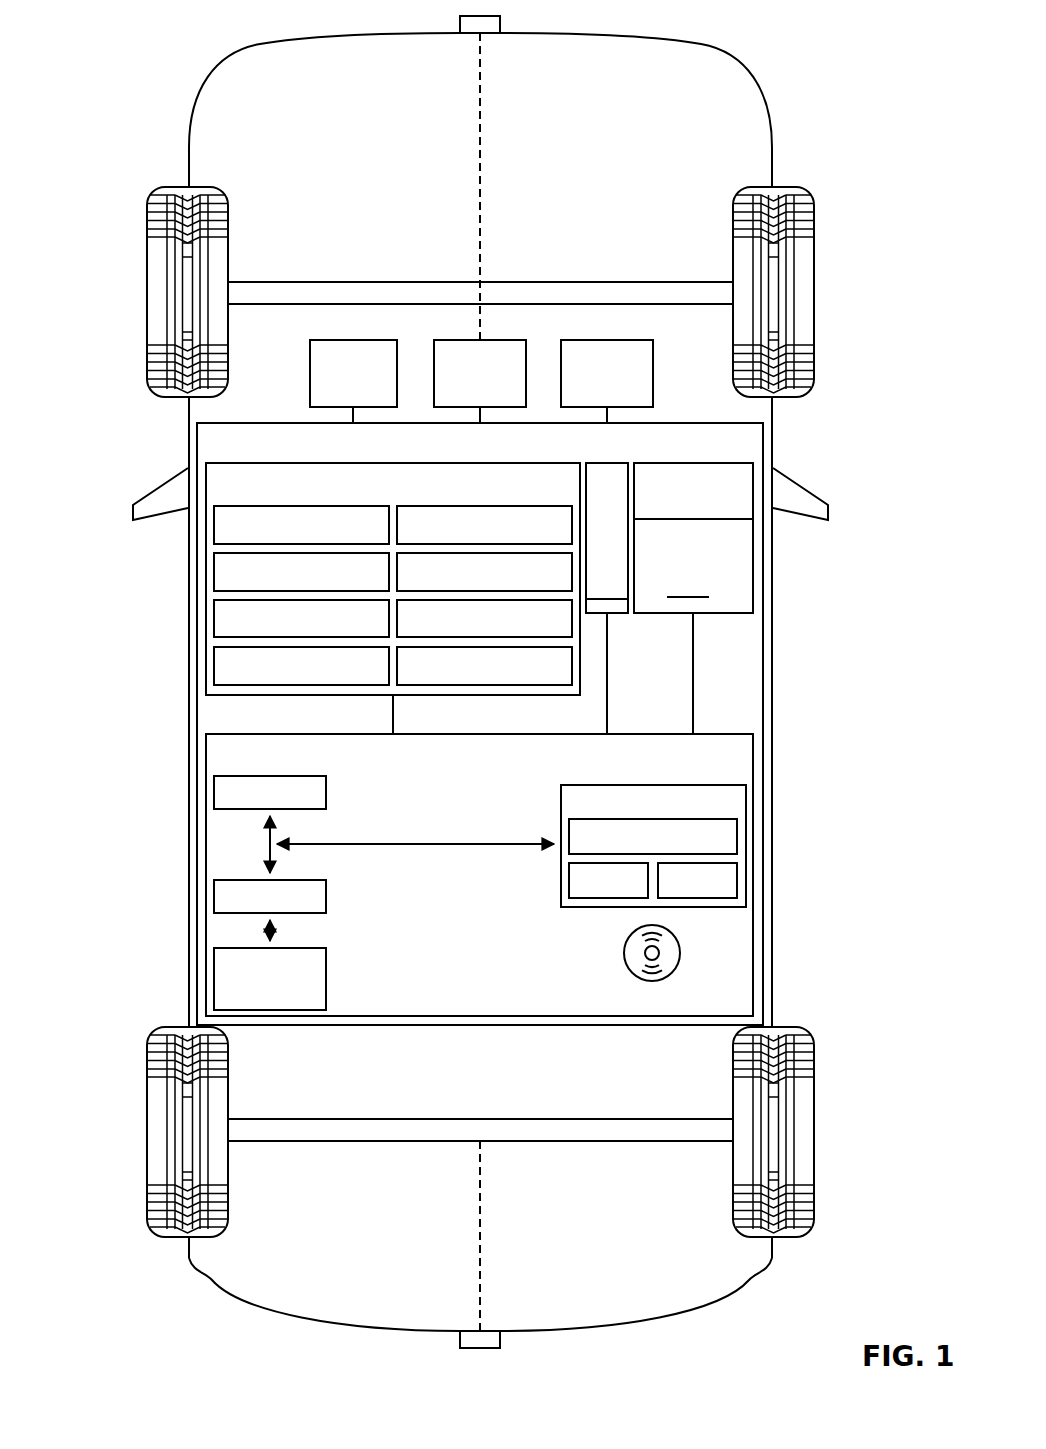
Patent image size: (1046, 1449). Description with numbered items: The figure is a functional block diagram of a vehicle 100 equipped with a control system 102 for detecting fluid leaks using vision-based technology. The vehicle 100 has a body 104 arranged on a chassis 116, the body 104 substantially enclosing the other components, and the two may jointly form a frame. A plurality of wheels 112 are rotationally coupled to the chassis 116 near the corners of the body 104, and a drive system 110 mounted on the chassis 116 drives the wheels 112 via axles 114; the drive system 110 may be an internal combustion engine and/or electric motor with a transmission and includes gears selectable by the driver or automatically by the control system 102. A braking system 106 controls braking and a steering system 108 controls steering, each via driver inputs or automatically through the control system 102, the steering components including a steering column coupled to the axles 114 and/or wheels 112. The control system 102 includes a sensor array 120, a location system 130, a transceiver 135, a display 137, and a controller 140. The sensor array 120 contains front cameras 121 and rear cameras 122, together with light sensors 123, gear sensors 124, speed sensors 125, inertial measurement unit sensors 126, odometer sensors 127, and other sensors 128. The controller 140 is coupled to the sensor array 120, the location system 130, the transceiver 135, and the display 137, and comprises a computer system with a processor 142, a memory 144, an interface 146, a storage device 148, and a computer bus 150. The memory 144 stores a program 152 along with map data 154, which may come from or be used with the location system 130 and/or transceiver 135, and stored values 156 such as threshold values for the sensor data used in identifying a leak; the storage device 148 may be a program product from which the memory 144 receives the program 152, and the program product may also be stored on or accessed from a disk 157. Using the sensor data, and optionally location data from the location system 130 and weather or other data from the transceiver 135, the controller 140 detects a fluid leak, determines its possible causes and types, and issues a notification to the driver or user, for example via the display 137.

The vehicle 100 is at (185, 63).
The control system 102 is at (763, 437).
The body 104 is at (195, 578).
The braking system 106 is at (372, 340).
The steering system 108 is at (467, 340).
The drive system 110 is at (610, 340).
The wheels 112 is at (147, 290).
The axles 114 is at (310, 288).
The chassis 116 is at (474, 189).
The sensor array 120 is at (272, 462).
The front cameras 121 is at (502, 25).
The rear cameras 122 is at (214, 565).
The light sensors 123 is at (214, 628).
The gear sensors 124 is at (214, 672).
The speed sensors 125 is at (510, 505).
The inertial measurement unit sensors 126 is at (551, 550).
The odometer sensors 127 is at (572, 620).
The other sensors 128 is at (572, 662).
The location system 130 is at (607, 598).
The transceiver 135 is at (693, 598).
The display 137 is at (753, 500).
The controller 140 is at (206, 752).
The processor 142 is at (214, 793).
The memory 144 is at (746, 792).
The interface 146 is at (214, 897).
The storage device 148 is at (214, 995).
The computer bus 150 is at (267, 835).
The program 152 is at (737, 838).
The map data 154 is at (615, 898).
The stored values 156 is at (737, 880).
The disk 157 is at (681, 955).